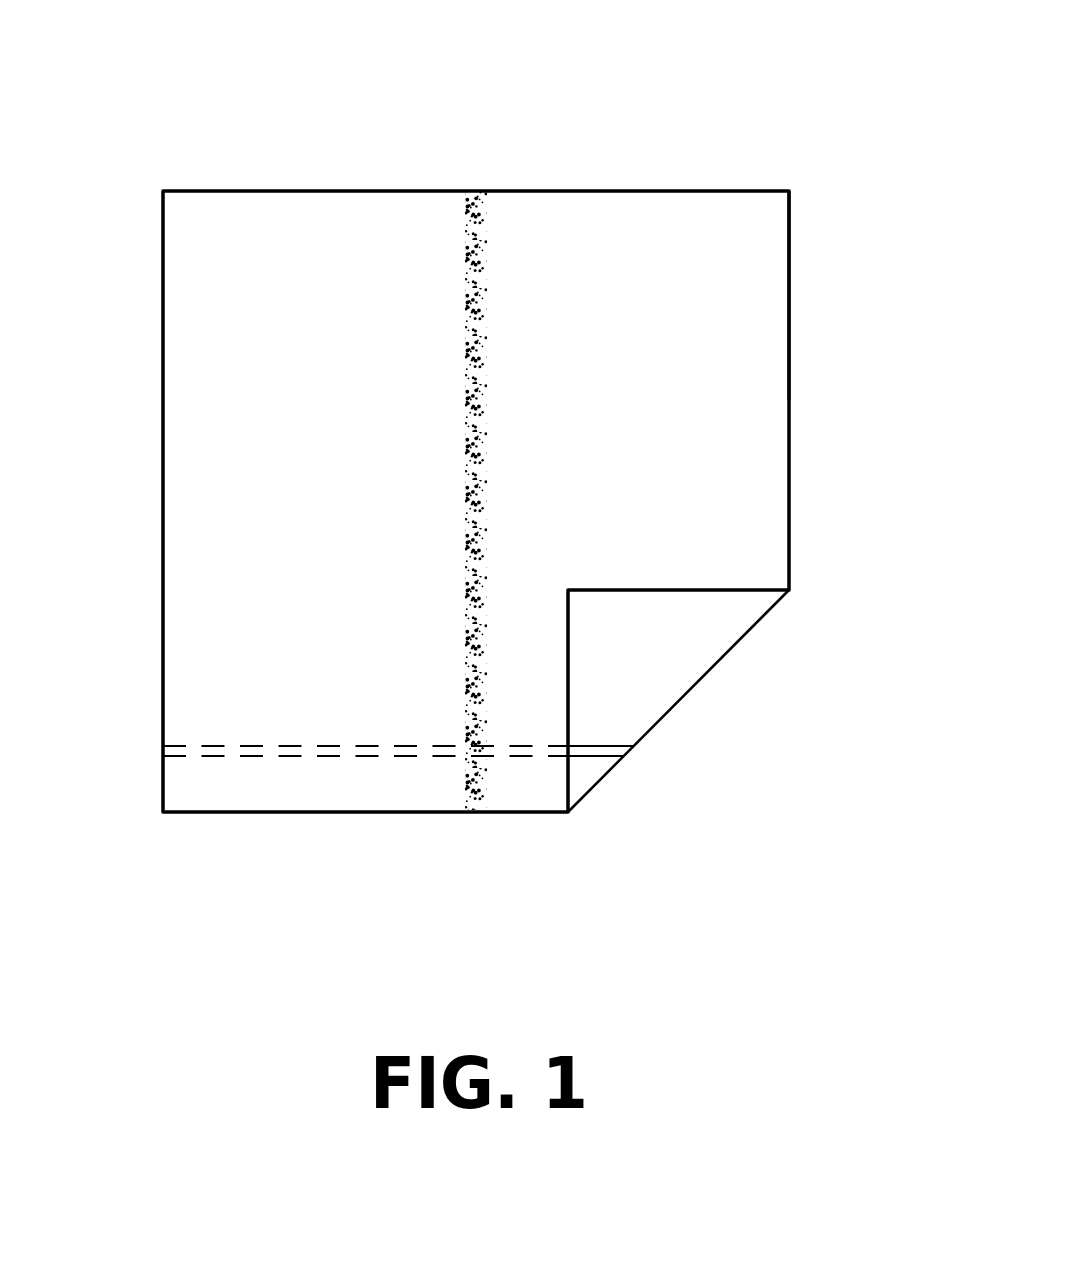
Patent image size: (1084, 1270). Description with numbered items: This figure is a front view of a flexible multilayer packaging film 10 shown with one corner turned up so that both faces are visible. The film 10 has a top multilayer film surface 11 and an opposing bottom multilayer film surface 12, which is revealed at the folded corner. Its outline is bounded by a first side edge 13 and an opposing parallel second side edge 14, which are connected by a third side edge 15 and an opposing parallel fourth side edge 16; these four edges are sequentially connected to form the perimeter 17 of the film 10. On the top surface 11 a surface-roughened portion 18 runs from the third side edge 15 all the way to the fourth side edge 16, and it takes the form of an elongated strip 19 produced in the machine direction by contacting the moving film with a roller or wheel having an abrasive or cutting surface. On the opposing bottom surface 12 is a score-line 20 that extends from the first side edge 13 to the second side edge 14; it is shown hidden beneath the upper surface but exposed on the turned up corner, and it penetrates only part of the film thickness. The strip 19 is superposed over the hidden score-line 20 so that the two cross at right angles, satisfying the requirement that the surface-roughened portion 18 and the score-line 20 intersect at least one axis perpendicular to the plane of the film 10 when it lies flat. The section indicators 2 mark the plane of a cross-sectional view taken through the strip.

The flexible multilayer packaging film 10 is at (249, 102).
The top multilayer film surface 11 is at (686, 383).
The bottom multilayer film surface 12 is at (651, 640).
The first side edge 13 is at (162, 497).
The second side edge 14 is at (790, 443).
The third side edge 15 is at (628, 191).
The fourth side edge 16 is at (257, 813).
The perimeter 17 is at (790, 263).
The surface-roughened portion 18 is at (473, 442).
The elongated strip 19 is at (483, 322).
The score-line 20 is at (582, 745).
The section line 2- 2 is at (529, 215).